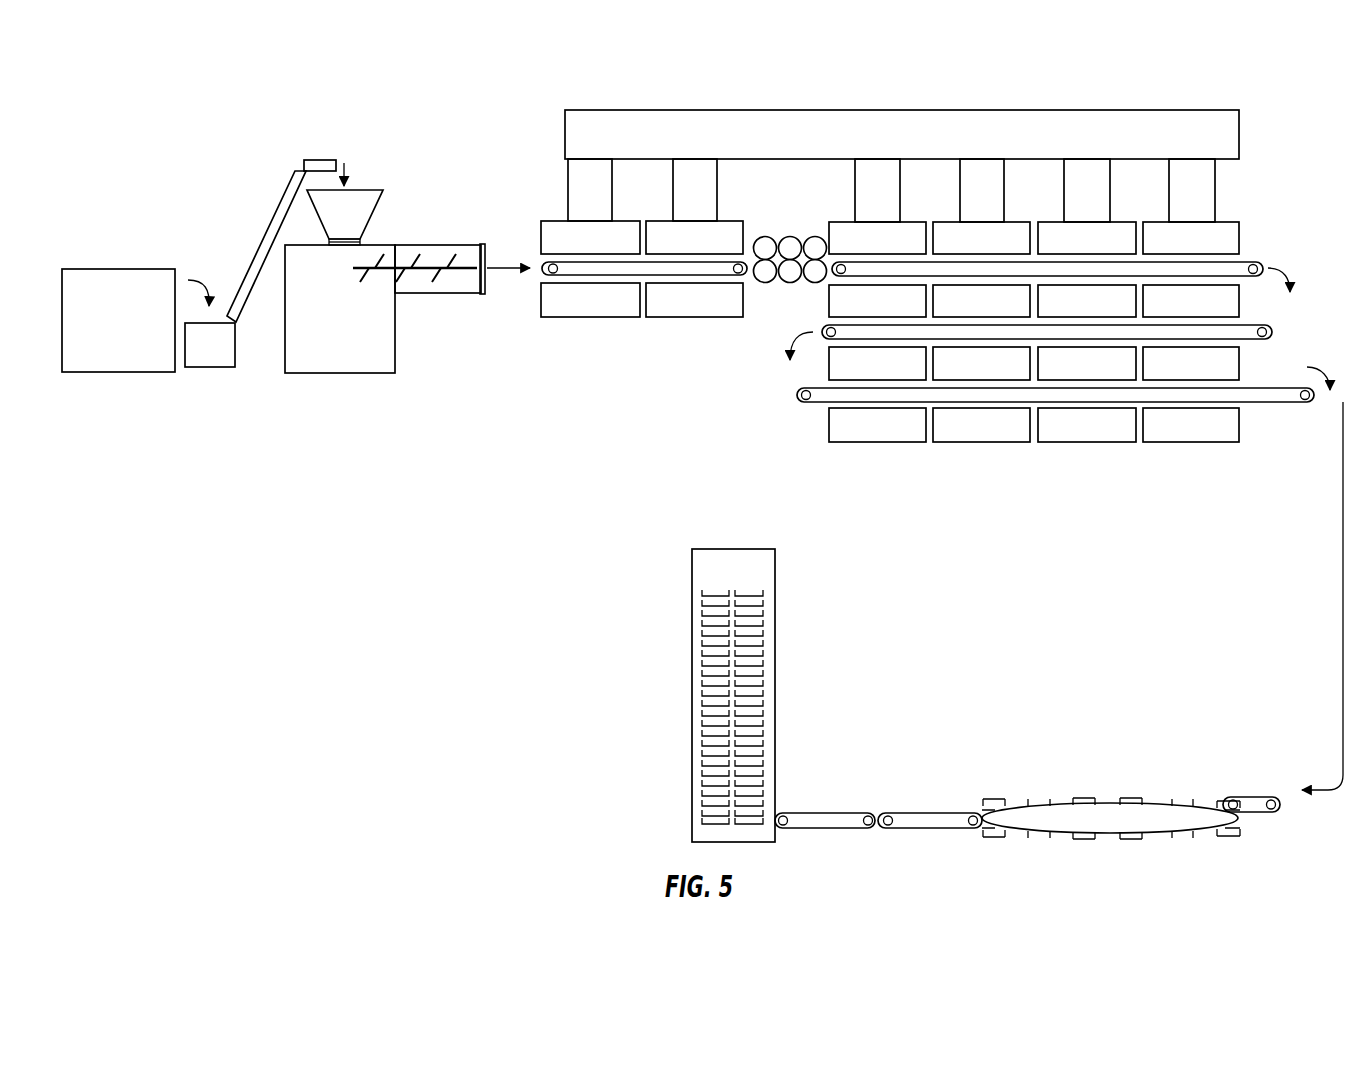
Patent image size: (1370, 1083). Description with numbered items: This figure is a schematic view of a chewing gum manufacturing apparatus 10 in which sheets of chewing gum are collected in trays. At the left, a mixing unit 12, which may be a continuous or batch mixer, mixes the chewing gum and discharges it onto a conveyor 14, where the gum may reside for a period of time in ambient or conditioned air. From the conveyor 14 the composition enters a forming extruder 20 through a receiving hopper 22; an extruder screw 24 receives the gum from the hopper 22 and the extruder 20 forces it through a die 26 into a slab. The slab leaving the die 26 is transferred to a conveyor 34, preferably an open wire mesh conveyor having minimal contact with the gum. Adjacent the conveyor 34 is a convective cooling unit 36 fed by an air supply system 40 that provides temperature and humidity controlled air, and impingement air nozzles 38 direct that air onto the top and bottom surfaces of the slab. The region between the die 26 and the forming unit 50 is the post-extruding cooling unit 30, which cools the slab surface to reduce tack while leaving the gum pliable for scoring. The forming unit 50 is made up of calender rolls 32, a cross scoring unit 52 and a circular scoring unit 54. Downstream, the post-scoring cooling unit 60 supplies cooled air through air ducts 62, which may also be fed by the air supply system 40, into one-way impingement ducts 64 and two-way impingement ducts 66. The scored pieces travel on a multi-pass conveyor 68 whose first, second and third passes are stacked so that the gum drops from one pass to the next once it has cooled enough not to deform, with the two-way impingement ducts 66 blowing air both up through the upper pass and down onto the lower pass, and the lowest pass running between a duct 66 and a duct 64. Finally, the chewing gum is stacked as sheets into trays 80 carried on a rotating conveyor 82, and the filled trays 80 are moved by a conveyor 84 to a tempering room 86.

The apparatus 10 is at (583, 75).
The mixing unit 12 is at (133, 334).
The conveyor 14 is at (210, 357).
The forming extruder 20 is at (355, 324).
The receiving hopper 22 is at (358, 229).
The extruder screw 24 is at (442, 266).
The die 26 is at (483, 294).
The post-extruding cooling unit 30 is at (620, 291).
The calender rolls 32 is at (763, 236).
The conveyor 34 is at (563, 264).
The convective cooling unit 36 is at (605, 204).
The impingement air nozzles 38 is at (605, 251).
The air supply system 40 is at (917, 149).
The forming unit 50 is at (765, 279).
The cross scoring unit 52 is at (790, 236).
The circular scoring unit 54 is at (826, 228).
The post-scoring cooling unit 60 is at (1067, 485).
The air ducts 62 is at (892, 204).
The one-way impingement ducts 64 is at (892, 252).
The two-way impingement ducts 66 is at (892, 314).
The conveyor 68 is at (1245, 259).
The trays 80 is at (1037, 804).
The rotating conveyor 82 is at (1157, 837).
The conveyor 84 is at (915, 819).
The tempering room 86 is at (775, 703).